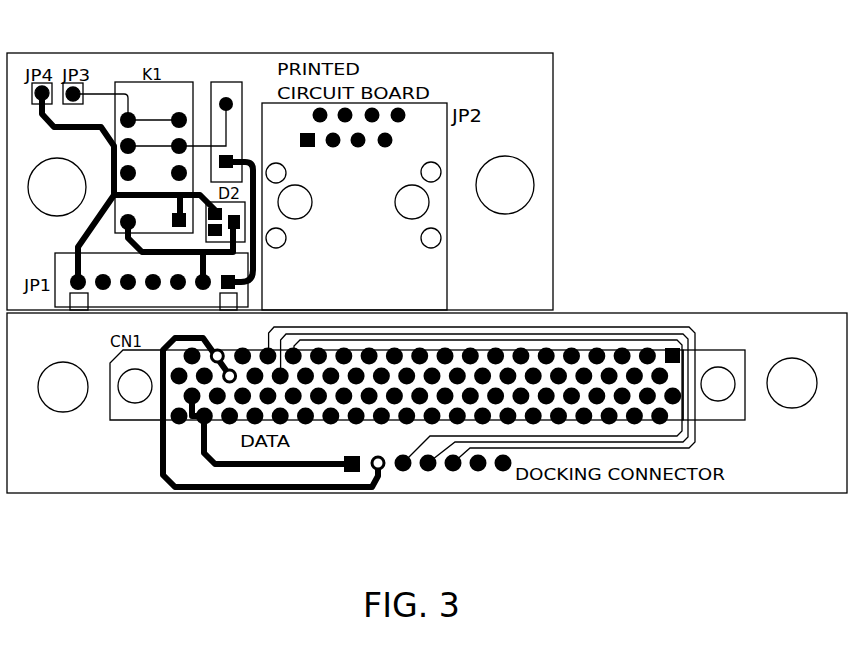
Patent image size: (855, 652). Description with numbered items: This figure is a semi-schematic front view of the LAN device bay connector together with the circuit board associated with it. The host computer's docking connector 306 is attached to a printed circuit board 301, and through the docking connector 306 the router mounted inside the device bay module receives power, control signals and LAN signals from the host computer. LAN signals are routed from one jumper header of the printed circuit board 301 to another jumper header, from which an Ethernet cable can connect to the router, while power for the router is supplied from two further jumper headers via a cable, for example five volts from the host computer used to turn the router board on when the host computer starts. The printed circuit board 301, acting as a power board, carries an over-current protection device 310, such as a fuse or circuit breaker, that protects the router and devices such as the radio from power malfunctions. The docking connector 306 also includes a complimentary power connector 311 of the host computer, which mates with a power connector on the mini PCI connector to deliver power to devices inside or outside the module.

The printed circuit board 301 is at (553, 107).
The over-current protection device 310 is at (230, 81).
The docking connector 306 is at (793, 493).
The power connector 311 is at (477, 481).